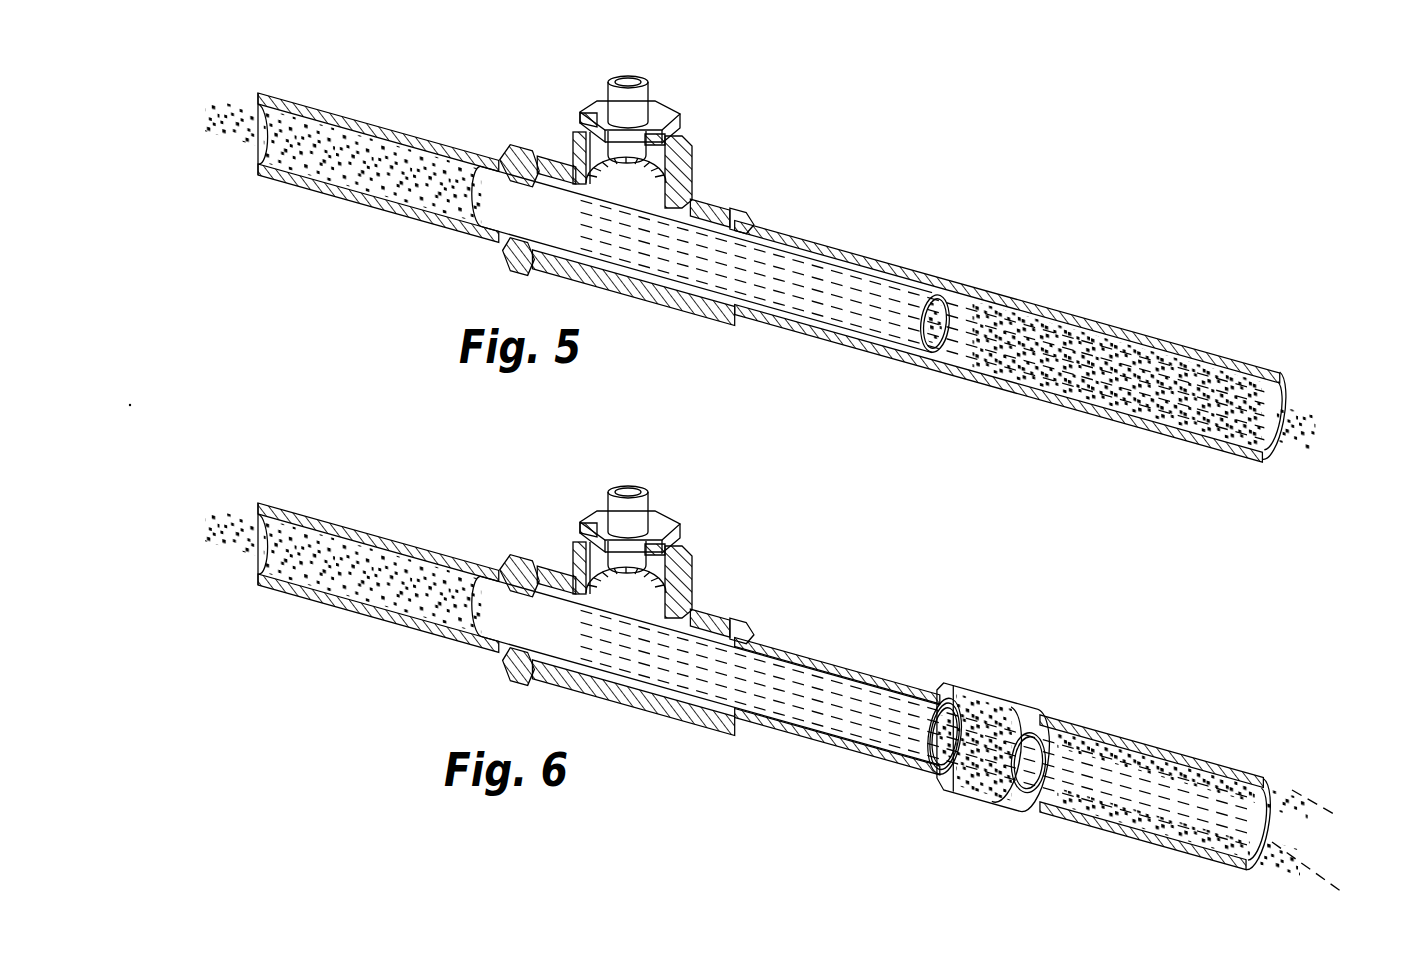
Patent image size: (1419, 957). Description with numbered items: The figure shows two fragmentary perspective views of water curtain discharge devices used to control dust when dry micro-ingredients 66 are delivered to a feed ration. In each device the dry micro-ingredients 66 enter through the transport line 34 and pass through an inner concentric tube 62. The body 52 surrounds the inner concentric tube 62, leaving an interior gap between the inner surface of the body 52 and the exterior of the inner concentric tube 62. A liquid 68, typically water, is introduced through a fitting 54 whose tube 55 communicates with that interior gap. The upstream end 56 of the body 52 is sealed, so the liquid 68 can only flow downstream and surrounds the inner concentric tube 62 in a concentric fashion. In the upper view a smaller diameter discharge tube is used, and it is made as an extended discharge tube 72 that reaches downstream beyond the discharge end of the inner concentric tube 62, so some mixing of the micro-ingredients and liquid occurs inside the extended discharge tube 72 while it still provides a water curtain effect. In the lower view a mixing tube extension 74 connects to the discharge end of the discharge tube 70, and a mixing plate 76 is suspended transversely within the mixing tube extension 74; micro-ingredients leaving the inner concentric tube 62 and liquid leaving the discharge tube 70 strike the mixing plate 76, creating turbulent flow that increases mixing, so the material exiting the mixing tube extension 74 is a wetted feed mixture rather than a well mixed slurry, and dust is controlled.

In FIG. 5, the transport line 34 is at (356, 108).
In FIG. 6, the transport line 34 is at (336, 520).
In FIG. 5, the body 52 is at (720, 204).
In FIG. 6, the body 52 is at (726, 615).
In FIG. 5, the fitting 54 is at (672, 136).
In FIG. 6, the fitting 54 is at (672, 538).
In FIG. 5, the tube 55 is at (640, 92).
In FIG. 6, the tube 55 is at (645, 508).
In FIG. 5, the upstream end 56 is at (512, 150).
In FIG. 6, the upstream end 56 is at (512, 565).
In FIG. 5, the inner concentric tube 62 is at (522, 206).
In FIG. 6, the inner concentric tube 62 is at (503, 626).
In FIG. 5, the dry micro-ingredients 66 is at (222, 140).
In FIG. 6, the dry micro-ingredients 66 is at (215, 540).
In FIG. 5, the liquid 68 is at (627, 16).
In FIG. 6, the liquid 68 is at (627, 476).
In FIG. 6, the discharge tube 70 is at (907, 672).
In FIG. 5, the extended discharge tube 72 is at (925, 268).
In FIG. 6, the mixing tube extension 74 is at (1089, 724).
In FIG. 6, the mixing plate 76 is at (1047, 812).